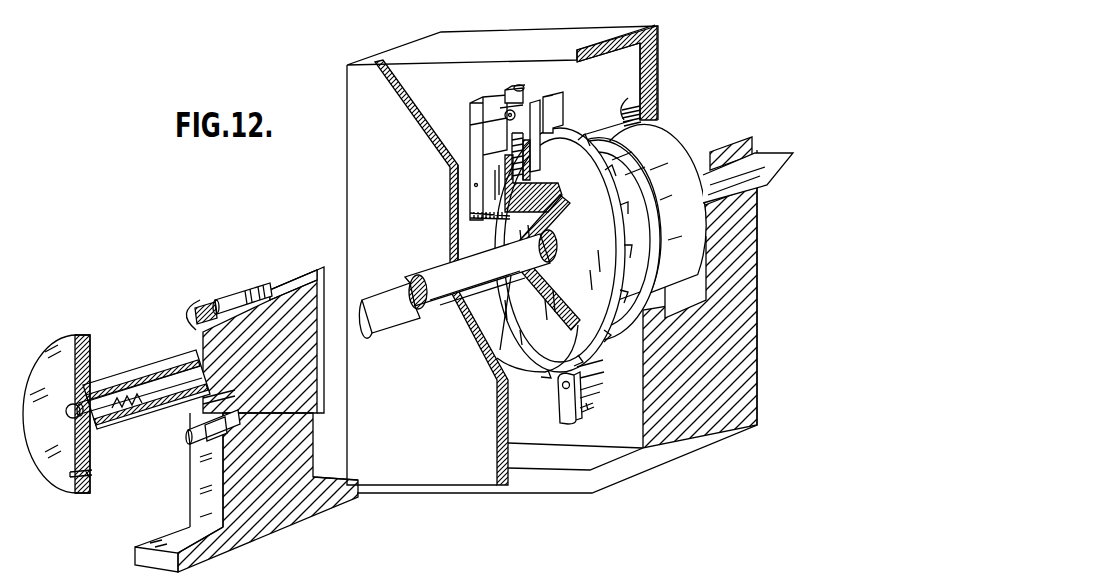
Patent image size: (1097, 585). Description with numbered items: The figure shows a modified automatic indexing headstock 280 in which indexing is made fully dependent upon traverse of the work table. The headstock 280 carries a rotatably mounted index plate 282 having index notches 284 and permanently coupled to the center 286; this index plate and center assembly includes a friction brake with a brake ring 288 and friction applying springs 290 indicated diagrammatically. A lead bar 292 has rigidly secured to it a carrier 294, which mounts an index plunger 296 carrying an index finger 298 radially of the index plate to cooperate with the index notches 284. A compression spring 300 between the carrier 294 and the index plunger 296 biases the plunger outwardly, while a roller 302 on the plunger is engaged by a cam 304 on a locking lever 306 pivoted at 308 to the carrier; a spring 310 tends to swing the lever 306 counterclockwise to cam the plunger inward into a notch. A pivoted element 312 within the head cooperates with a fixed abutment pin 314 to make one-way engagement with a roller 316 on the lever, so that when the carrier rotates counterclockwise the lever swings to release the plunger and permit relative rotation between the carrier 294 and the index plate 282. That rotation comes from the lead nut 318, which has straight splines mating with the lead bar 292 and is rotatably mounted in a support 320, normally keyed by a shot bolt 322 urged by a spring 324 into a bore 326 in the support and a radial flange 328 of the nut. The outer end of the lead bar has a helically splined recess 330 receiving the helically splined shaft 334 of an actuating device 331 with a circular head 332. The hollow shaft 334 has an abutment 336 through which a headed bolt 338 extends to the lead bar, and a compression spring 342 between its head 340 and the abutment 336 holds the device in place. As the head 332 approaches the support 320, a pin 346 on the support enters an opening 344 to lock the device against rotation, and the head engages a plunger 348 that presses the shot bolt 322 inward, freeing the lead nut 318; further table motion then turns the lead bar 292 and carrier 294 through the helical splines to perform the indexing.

The automatic indexing headstock 280 is at (754, 402).
The index plate 282 is at (583, 133).
The index notches 284 is at (602, 197).
The center 286 is at (736, 178).
The brake ring 288 is at (650, 163).
The friction applying springs 290 is at (645, 100).
The lead bar 292 is at (405, 320).
The carrier 294 is at (537, 314).
The index plunger 296 is at (541, 100).
The index finger 298 is at (546, 156).
The compression spring 300 is at (488, 130).
The roller 302 is at (503, 115).
The cam 304 is at (508, 100).
The locking lever 306 is at (452, 168).
The pivot 308 is at (450, 210).
The spring 310 is at (470, 238).
The pivoted element 312 is at (560, 403).
The fixed abutment pin 314 is at (582, 407).
The roller 316 is at (520, 86).
The lead nut 318 is at (297, 373).
The support 320 is at (300, 497).
The shot bolt 322 is at (227, 300).
The spring 324 is at (272, 285).
The bore 326 is at (249, 290).
The radial flange 328 is at (184, 327).
The recess 330 is at (112, 418).
The actuating device 331 is at (62, 490).
The circular head 332 is at (90, 342).
The helically splined shaft 334 is at (152, 380).
The abutment 336 is at (265, 403).
The headed bolt 338 is at (77, 403).
The head 340 is at (69, 418).
The compression spring 342 is at (126, 412).
The opening 344 is at (94, 472).
The pin 346 is at (190, 437).
The plunger 348 is at (199, 305).